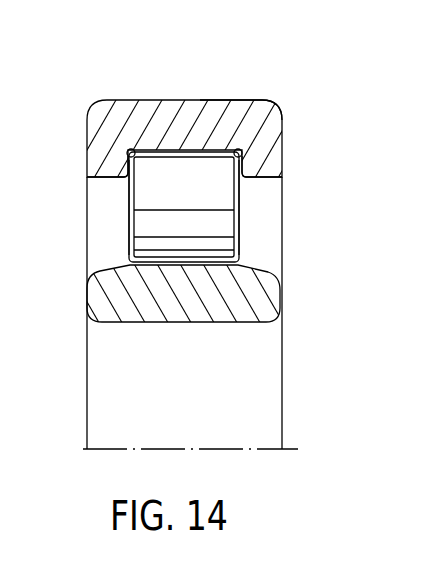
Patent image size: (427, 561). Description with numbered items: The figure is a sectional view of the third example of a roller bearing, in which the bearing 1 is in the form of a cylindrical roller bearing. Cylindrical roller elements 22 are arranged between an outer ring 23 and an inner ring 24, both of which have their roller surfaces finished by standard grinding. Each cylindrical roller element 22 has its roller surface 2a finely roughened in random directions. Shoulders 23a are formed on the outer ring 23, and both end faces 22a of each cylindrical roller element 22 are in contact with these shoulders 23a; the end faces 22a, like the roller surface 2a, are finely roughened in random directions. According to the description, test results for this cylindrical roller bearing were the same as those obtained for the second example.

The bearing 1 is at (108, 92).
The cylindrical roller element 22 is at (156, 163).
The end face 22a is at (132, 218).
The outer ring 23 is at (191, 113).
The shoulder 23a is at (124, 180).
The roller surface 2a is at (216, 104).
The inner ring 24 is at (258, 312).